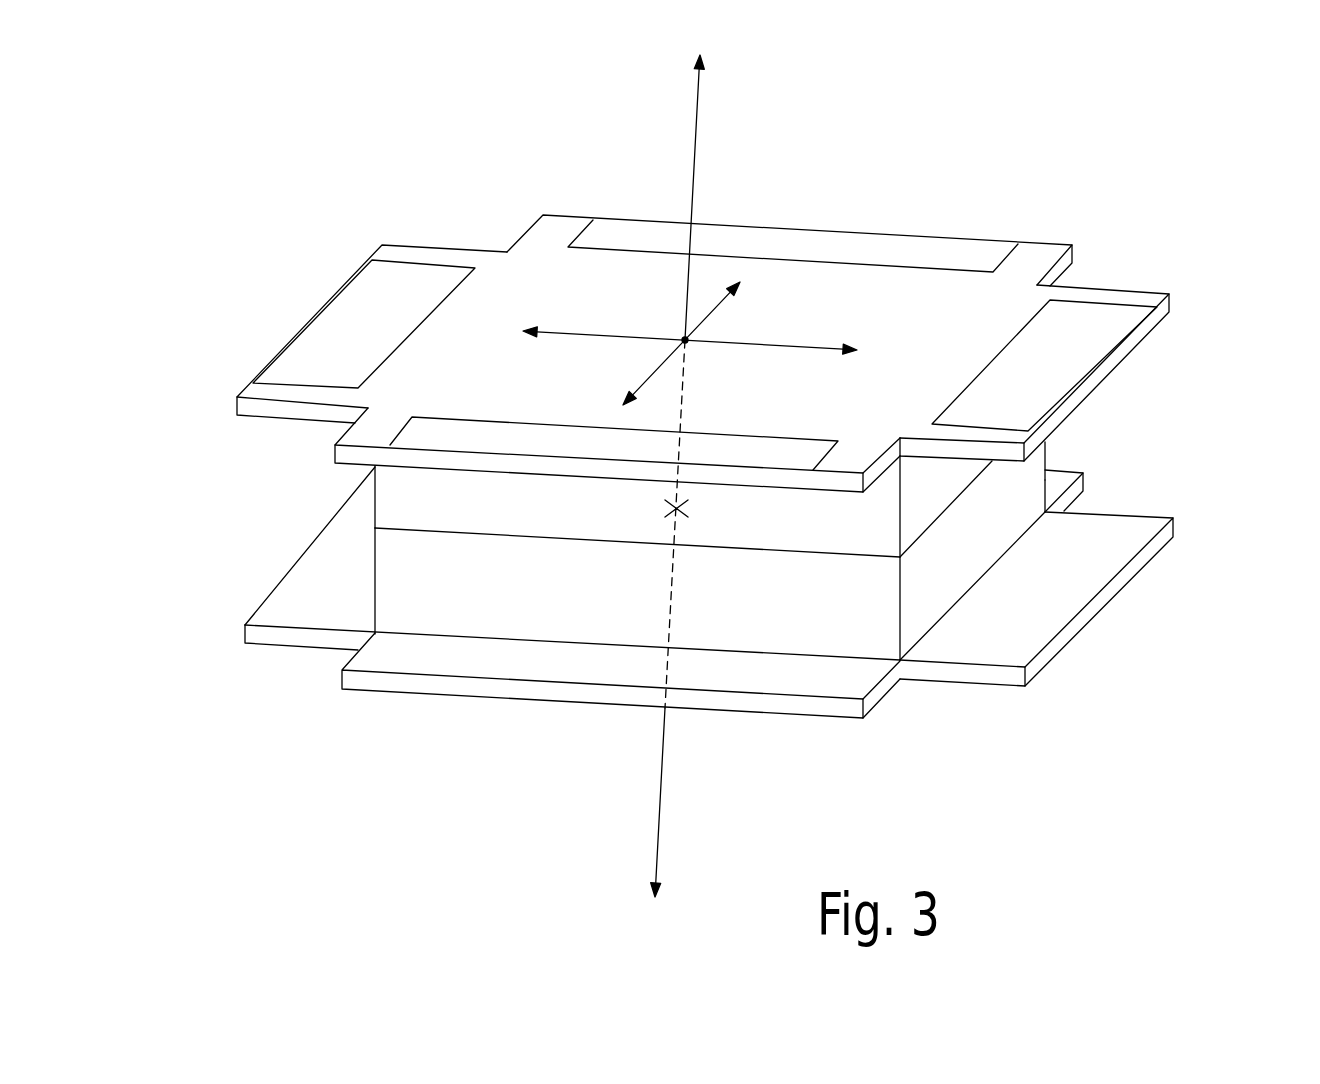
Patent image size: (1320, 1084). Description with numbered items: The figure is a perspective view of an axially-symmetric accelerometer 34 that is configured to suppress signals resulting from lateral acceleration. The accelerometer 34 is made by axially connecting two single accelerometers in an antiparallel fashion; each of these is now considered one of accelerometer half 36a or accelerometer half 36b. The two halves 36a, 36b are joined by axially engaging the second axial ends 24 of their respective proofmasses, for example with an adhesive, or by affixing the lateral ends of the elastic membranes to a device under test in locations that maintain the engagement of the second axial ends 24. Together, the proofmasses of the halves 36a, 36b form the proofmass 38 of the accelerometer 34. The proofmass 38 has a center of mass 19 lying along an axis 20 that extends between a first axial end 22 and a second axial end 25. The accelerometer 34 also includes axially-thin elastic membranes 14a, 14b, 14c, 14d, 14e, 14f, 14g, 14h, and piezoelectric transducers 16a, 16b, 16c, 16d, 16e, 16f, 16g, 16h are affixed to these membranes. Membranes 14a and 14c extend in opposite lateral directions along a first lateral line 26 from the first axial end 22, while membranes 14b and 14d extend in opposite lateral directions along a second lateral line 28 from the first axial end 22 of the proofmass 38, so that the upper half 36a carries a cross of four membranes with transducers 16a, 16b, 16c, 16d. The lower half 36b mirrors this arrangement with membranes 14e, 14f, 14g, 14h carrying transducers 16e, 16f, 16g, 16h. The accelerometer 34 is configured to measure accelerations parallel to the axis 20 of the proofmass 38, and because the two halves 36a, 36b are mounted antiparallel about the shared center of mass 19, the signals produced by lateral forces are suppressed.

The axially-symmetric accelerometer 34 is at (465, 183).
The first axial end 22 is at (555, 232).
The axis 20 is at (700, 115).
The first lateral line 26 is at (770, 342).
The second lateral line 28 is at (658, 367).
The center of mass 19 is at (683, 508).
The second axial end 24 is at (1030, 534).
The second axial end 25 is at (798, 722).
The axially-thin elastic membrane 14a is at (248, 408).
The axially-thin elastic membrane 14b is at (347, 453).
The axially-thin elastic membrane 14c is at (1170, 308).
The axially-thin elastic membrane 14d is at (1072, 246).
The axially-thin elastic membrane 14e is at (257, 633).
The axially-thin elastic membrane 14f is at (358, 680).
The axially-thin elastic membrane 14g is at (1172, 523).
The axially-thin elastic membrane 14h is at (1060, 480).
The piezoelectric transducer 16a is at (362, 305).
The piezoelectric transducer 16b is at (506, 440).
The piezoelectric transducer 16c is at (1062, 368).
The piezoelectric transducer 16d is at (860, 232).
The piezoelectric transducer 16e is at (328, 655).
The piezoelectric transducer 16f is at (575, 712).
The piezoelectric transducer 16g is at (1097, 628).
The piezoelectric transducer 16h is at (1088, 495).
The accelerometer half 36a is at (387, 484).
The accelerometer half 36b is at (405, 598).
The proofmass 38 is at (355, 530).